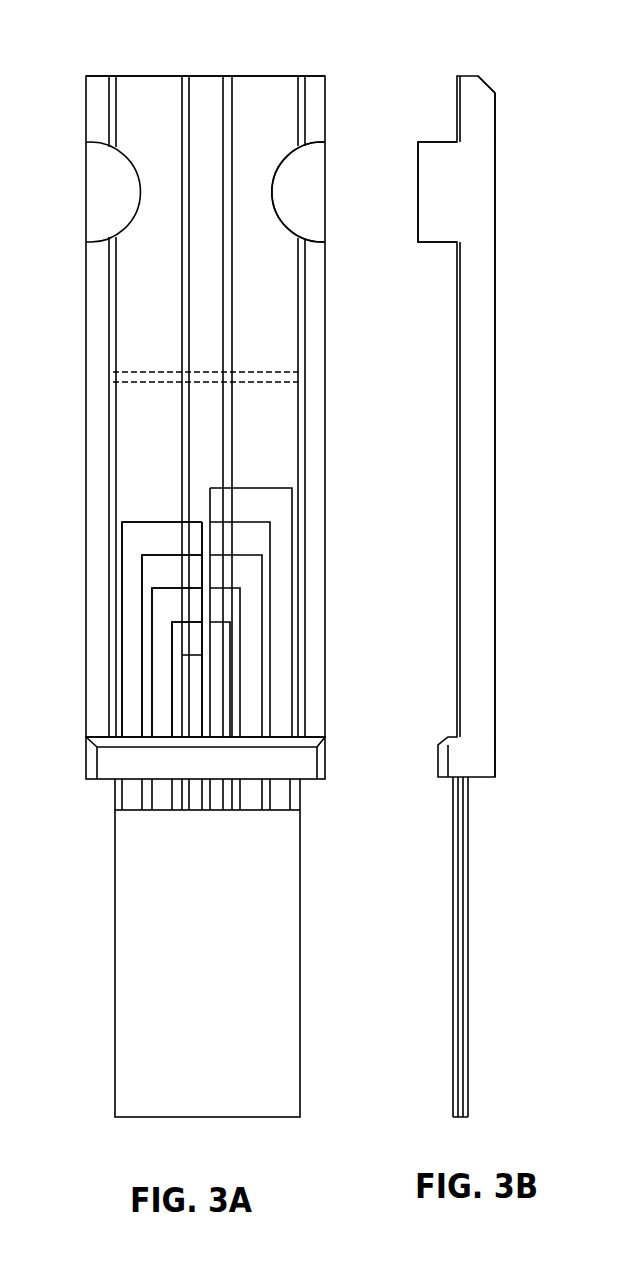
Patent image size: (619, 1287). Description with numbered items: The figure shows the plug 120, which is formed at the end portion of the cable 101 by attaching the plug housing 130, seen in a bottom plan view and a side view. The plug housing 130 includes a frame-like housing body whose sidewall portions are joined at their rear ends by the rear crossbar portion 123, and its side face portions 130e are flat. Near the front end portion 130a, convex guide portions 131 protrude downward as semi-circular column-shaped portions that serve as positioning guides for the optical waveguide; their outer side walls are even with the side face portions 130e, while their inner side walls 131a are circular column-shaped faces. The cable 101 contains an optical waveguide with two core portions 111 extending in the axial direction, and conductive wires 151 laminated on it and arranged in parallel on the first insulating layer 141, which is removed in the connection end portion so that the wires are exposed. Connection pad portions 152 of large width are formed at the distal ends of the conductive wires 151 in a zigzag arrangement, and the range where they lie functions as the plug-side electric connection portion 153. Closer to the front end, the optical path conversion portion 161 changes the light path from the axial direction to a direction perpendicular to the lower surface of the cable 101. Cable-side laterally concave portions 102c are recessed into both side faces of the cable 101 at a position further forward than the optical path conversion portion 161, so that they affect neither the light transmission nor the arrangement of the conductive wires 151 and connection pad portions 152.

In FIG. 3A, the cable 101 is at (300, 955).
In FIG. 3B, the cable 101 is at (469, 998).
In FIG. 3A, the cable-side laterally concave portion 102c is at (127, 232).
In FIG. 3A, the core portion 111 is at (233, 433).
In FIG. 3B, the plug 120 is at (582, 82).
In FIG. 3A, the rear crossbar portion 123 is at (302, 770).
In FIG. 3A, the plug housing 130 is at (86, 412).
In FIG. 3B, the plug housing 130 is at (495, 520).
In FIG. 3A, the front end portion 130a is at (307, 76).
In FIG. 3B, the side face portion 130e is at (487, 120).
In FIG. 3A, the convex guide portion 131 is at (316, 174).
In FIG. 3B, the convex guide portion 131 is at (433, 233).
In FIG. 3A, the inner side wall 131a is at (283, 214).
In FIG. 3A, the first insulating layer 141 is at (283, 1037).
In FIG. 3B, the first insulating layer 141 is at (455, 856).
In FIG. 3A, the conductive wire 151 is at (282, 615).
In FIG. 3A, the connection pad portion 152 is at (252, 505).
In FIG. 3A, the plug-side electric connection portion 153 is at (75, 475).
In FIG. 3A, the optical path conversion portion 161 is at (122, 372).